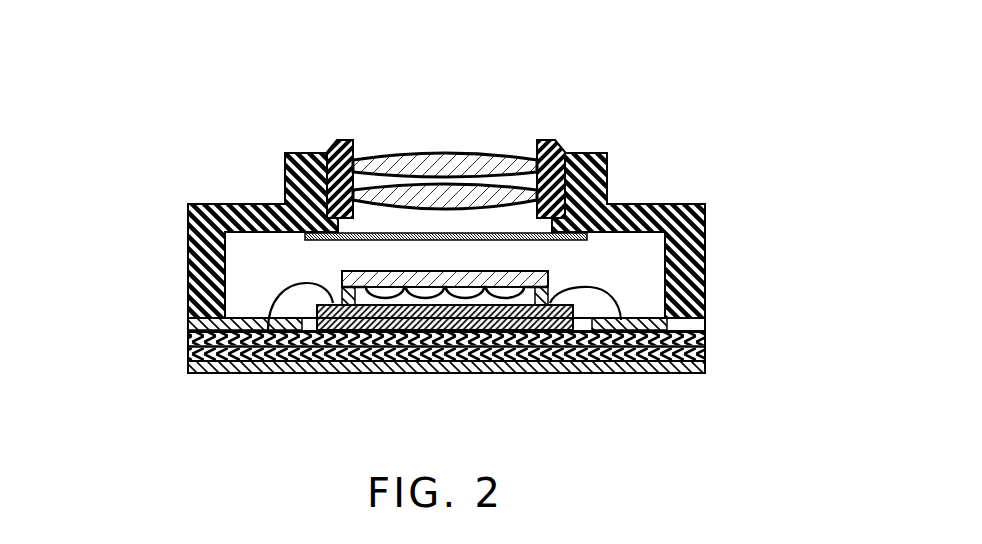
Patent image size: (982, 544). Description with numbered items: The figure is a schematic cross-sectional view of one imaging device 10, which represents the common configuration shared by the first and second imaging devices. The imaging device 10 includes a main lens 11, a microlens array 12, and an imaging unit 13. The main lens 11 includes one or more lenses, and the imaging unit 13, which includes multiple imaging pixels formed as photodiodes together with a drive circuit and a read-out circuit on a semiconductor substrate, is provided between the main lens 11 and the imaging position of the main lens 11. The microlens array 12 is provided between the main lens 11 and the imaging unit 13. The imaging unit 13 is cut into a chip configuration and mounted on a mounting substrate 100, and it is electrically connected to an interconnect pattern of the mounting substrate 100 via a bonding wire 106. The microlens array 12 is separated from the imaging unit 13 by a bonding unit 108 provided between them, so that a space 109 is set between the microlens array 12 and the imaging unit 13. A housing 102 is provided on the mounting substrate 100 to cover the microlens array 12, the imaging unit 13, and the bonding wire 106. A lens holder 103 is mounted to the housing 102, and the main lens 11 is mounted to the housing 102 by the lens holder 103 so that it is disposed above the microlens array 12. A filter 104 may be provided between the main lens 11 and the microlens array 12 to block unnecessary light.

The imaging device 10 is at (647, 86).
The main lens 11 is at (478, 125).
The microlens array 12 is at (343, 275).
The imaging unit 13 is at (487, 318).
The mounting substrate 100 is at (320, 347).
The housing 102 is at (297, 165).
The lens holder 103 is at (340, 140).
The filter 104 is at (571, 245).
The bonding wire 106 is at (275, 300).
The bonding unit 108 is at (547, 293).
The space 109 is at (527, 302).